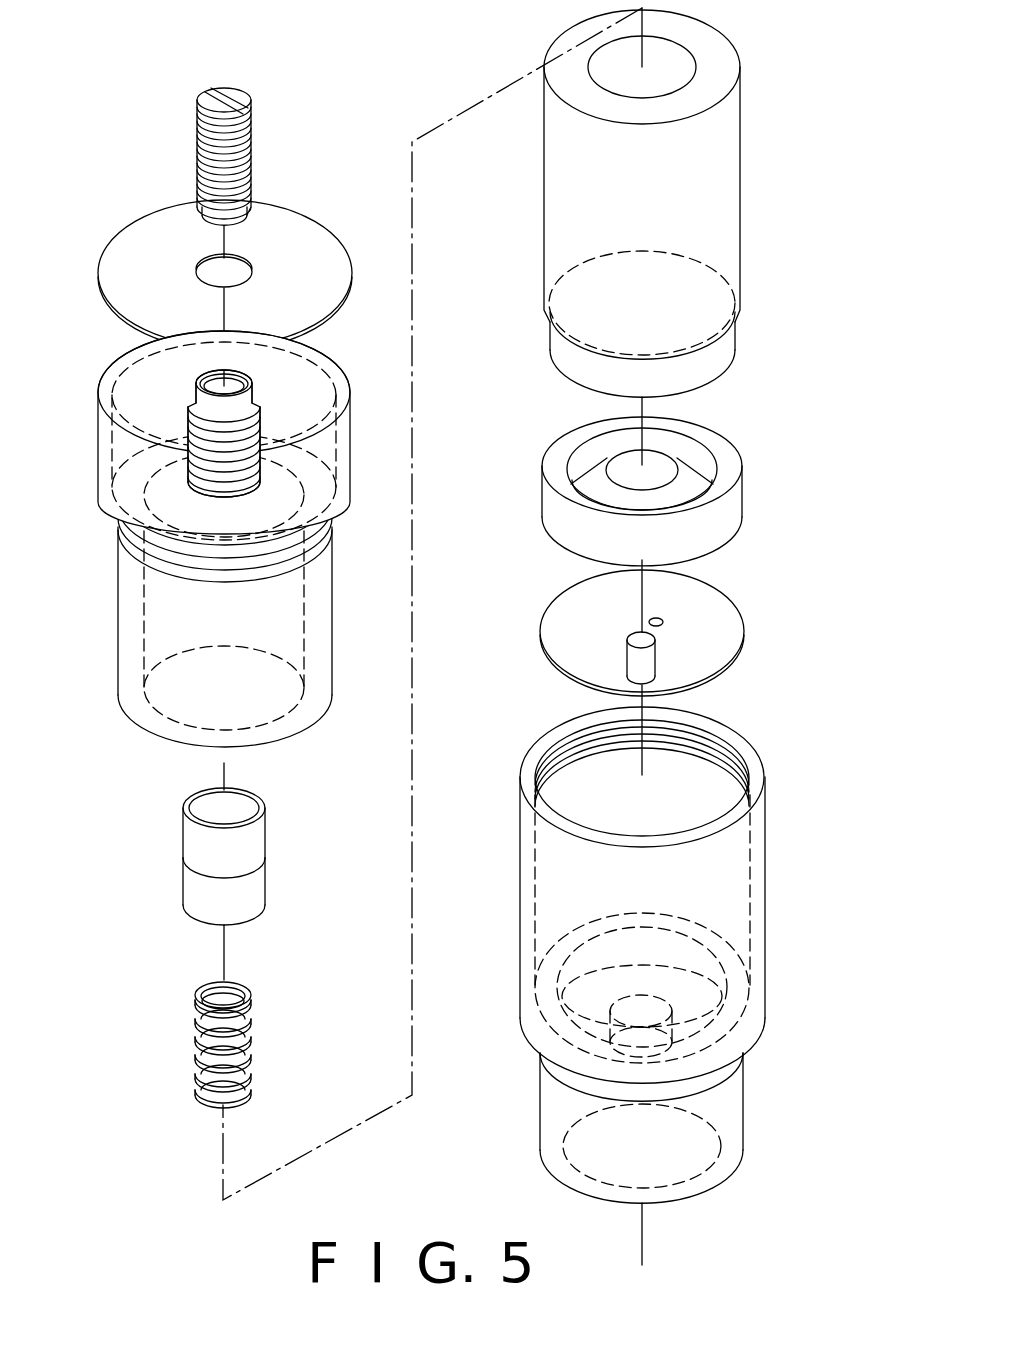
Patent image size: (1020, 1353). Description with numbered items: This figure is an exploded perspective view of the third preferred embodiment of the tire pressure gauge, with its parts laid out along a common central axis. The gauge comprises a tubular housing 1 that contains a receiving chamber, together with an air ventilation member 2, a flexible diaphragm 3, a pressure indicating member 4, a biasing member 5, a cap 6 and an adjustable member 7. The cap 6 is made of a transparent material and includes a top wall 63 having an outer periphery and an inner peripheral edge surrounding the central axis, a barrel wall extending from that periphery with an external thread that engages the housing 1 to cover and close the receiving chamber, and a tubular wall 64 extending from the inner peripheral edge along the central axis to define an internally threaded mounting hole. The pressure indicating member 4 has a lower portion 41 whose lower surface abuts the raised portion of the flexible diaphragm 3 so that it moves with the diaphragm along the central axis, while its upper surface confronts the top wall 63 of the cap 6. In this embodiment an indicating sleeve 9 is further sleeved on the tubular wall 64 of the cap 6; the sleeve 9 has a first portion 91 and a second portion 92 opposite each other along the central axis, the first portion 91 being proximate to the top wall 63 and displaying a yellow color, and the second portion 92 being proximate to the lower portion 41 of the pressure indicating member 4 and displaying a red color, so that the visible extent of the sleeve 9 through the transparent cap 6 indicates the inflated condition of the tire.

The tubular housing 1 is at (520, 888).
The air ventilation member 2 is at (545, 620).
The flexible diaphragm 3 is at (545, 495).
The pressure indicating member 4 is at (610, 203).
The lower portion 41 is at (560, 348).
The biasing member 5 is at (251, 1050).
The cap 6 is at (231, 525).
The top wall 63 is at (323, 358).
The tubular wall 64 is at (170, 420).
The adjustable member 7 is at (251, 140).
The indicating sleeve 9 is at (231, 881).
The first portion 91 is at (252, 840).
The second portion 92 is at (247, 905).